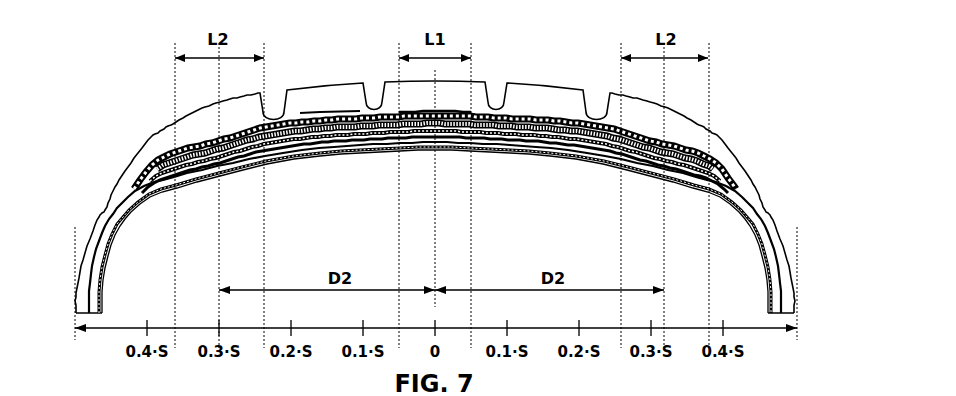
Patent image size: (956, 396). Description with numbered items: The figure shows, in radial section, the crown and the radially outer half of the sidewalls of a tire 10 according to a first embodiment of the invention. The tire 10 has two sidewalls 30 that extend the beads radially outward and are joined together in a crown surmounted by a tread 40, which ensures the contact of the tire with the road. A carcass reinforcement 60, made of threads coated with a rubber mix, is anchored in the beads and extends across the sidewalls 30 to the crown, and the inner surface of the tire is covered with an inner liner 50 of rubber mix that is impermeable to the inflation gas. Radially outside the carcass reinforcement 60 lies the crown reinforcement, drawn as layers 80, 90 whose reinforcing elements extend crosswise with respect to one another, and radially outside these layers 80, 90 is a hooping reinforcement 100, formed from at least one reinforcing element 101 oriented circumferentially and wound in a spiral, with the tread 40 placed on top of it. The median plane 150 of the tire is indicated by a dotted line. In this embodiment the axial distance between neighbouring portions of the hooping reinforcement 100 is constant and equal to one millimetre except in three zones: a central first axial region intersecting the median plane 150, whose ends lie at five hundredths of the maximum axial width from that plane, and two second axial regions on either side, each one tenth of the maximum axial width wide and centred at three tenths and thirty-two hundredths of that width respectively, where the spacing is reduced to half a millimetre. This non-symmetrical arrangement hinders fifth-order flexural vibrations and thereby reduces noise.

The tire 10 is at (763, 126).
The sidewall 30 is at (88, 268).
The tread 40 is at (548, 97).
The inner liner 50 is at (102, 277).
The carcass reinforcement 60 is at (143, 207).
The belt layer 80 is at (308, 155).
The belt reinforcing layer 90 is at (355, 148).
The hooping reinforcement 100 is at (152, 167).
The reinforcing element 101 is at (328, 115).
The median plane 150 is at (437, 183).